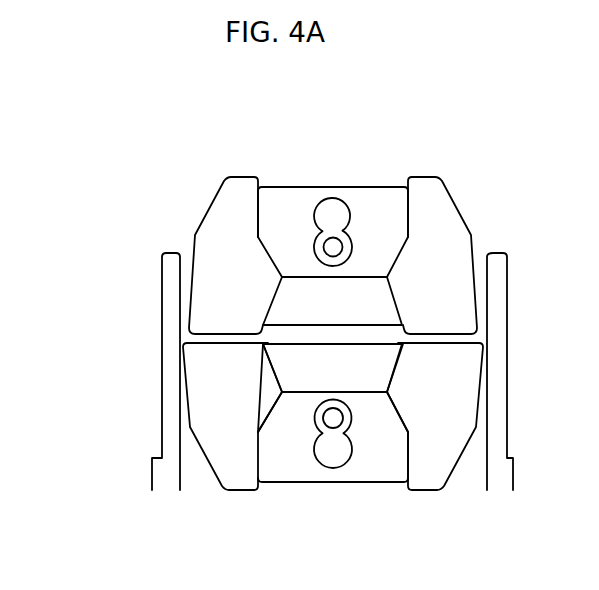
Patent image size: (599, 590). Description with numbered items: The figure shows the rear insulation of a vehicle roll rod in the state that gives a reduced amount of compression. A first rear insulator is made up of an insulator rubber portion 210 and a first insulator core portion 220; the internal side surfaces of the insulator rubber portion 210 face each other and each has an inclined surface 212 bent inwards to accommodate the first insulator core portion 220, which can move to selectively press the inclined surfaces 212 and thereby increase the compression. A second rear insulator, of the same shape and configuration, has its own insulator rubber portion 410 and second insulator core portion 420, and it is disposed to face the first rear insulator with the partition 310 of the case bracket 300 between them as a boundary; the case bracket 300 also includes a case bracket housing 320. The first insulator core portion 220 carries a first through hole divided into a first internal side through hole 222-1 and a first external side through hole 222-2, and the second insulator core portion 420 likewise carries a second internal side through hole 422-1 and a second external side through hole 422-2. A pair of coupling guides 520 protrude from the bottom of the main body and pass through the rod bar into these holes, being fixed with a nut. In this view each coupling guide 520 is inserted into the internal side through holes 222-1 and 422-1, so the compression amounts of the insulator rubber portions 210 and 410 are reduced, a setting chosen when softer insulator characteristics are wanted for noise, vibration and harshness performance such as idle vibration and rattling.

The insulator rubber portion 210 is at (193, 233).
The inclined surface 212 is at (401, 254).
The first insulator core portion 220 is at (284, 181).
The first internal side through hole 222-1 is at (138, 282).
The first external side through hole 222-2 is at (324, 205).
The coupling guide 520 is at (255, 530).
The case bracket 300 is at (270, 371).
The partition 310 is at (300, 334).
The case bracket housing 320 is at (172, 320).
The insulator rubber portion 410 is at (216, 443).
The second insulator core portion 420 is at (391, 453).
The second internal side through hole 422-1 is at (350, 411).
The second external side through hole 422-2 is at (317, 456).